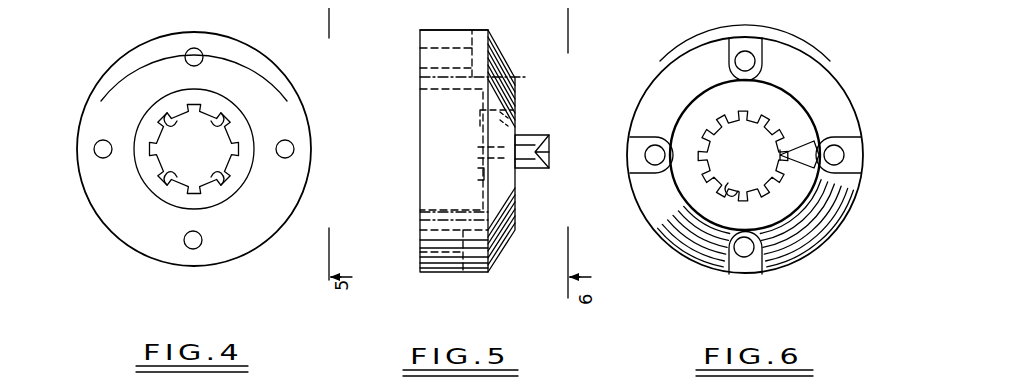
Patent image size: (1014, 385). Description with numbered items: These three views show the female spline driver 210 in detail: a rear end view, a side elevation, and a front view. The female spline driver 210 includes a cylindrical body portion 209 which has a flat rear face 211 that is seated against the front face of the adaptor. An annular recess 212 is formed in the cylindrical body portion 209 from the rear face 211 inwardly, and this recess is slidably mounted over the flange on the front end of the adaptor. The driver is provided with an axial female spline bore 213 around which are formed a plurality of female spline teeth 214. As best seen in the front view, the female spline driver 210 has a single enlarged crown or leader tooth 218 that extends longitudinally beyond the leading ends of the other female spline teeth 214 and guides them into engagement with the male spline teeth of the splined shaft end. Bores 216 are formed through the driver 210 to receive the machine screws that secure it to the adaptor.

In FIG. 4, the cylindrical body portion 209 is at (181, 25).
In FIG. 5, the cylindrical body portion 209 is at (447, 27).
In FIG. 6, the cylindrical body portion 209 is at (684, 52).
In FIG. 4, the female spline driver 210 is at (125, 248).
In FIG. 5, the female spline driver 210 is at (446, 267).
In FIG. 6, the female spline driver 210 is at (811, 247).
In FIG. 4, the flat rear face 211 is at (281, 93).
In FIG. 5, the flat rear face 211 is at (412, 72).
In FIG. 6, the flat rear face 211 is at (745, 155).
In FIG. 5, the annular recess 212 is at (432, 82).
In FIG. 4, the axial female spline bore 213 is at (172, 105).
In FIG. 5, the axial female spline bore 213 is at (515, 113).
In FIG. 6, the axial female spline bore 213 is at (726, 182).
In FIG. 4, the female spline teeth 214 is at (178, 169).
In FIG. 5, the female spline teeth 214 is at (470, 170).
In FIG. 6, the female spline teeth 214 is at (743, 156).
In FIG. 4, the bores 216 is at (189, 43).
In FIG. 5, the bores 216 is at (412, 42).
In FIG. 6, the bores 216 is at (749, 55).
In FIG. 5, the enlarged crown tooth 218 is at (525, 161).
In FIG. 6, the enlarged crown tooth 218 is at (789, 137).